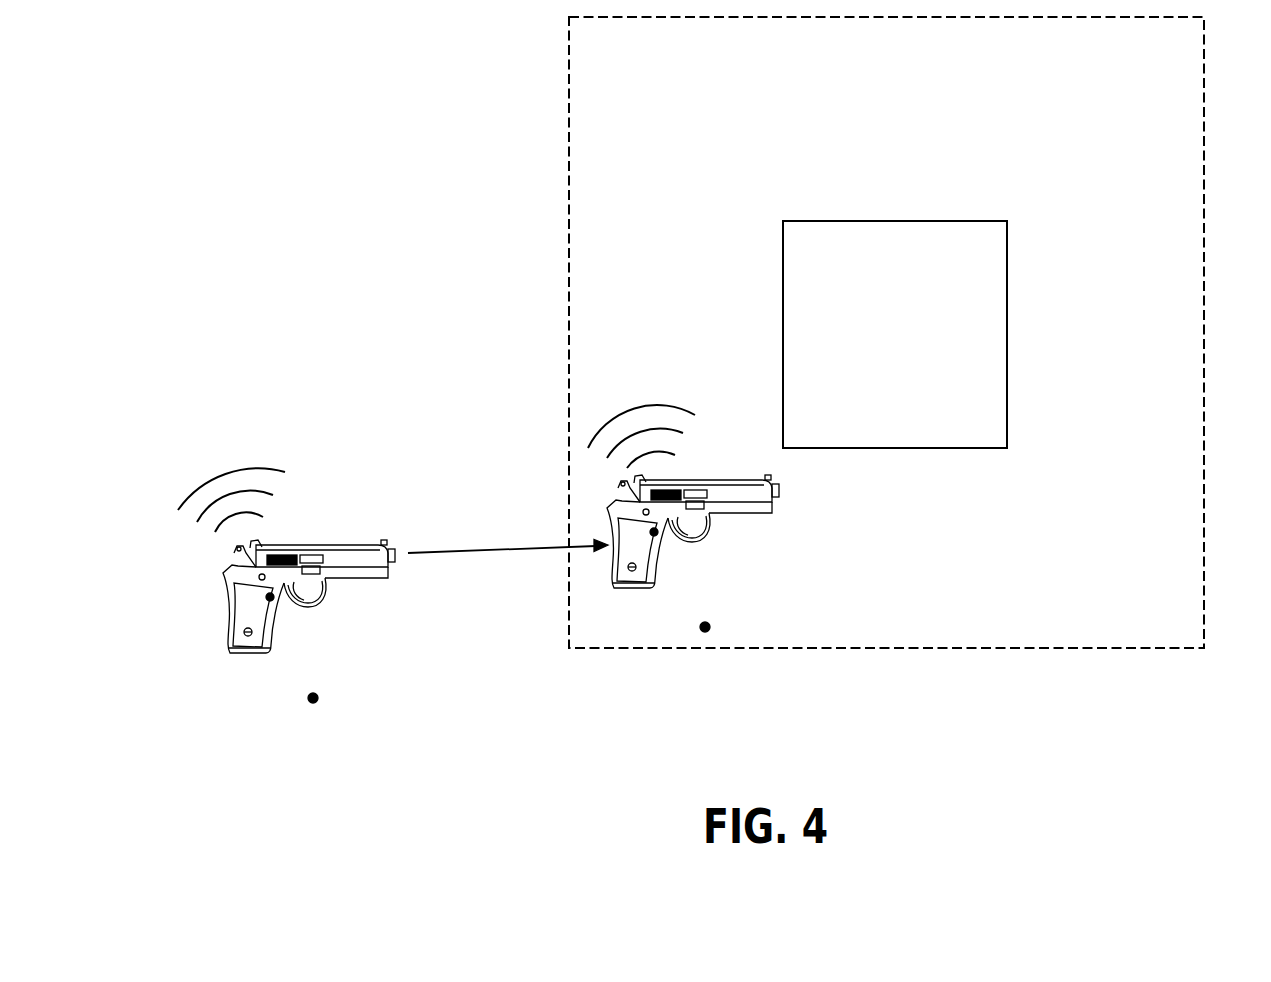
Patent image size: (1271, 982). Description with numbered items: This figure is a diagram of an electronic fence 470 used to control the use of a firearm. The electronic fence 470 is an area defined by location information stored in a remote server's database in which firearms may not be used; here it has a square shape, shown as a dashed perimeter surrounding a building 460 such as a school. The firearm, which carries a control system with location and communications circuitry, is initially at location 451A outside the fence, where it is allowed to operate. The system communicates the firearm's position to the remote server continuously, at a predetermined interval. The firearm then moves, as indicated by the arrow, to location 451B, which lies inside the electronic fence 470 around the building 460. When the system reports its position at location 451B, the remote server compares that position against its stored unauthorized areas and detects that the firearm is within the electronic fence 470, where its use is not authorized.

The location 451A is at (318, 699).
The location 451B is at (710, 629).
The building 460 is at (893, 449).
The electronic fence 470 is at (1205, 442).